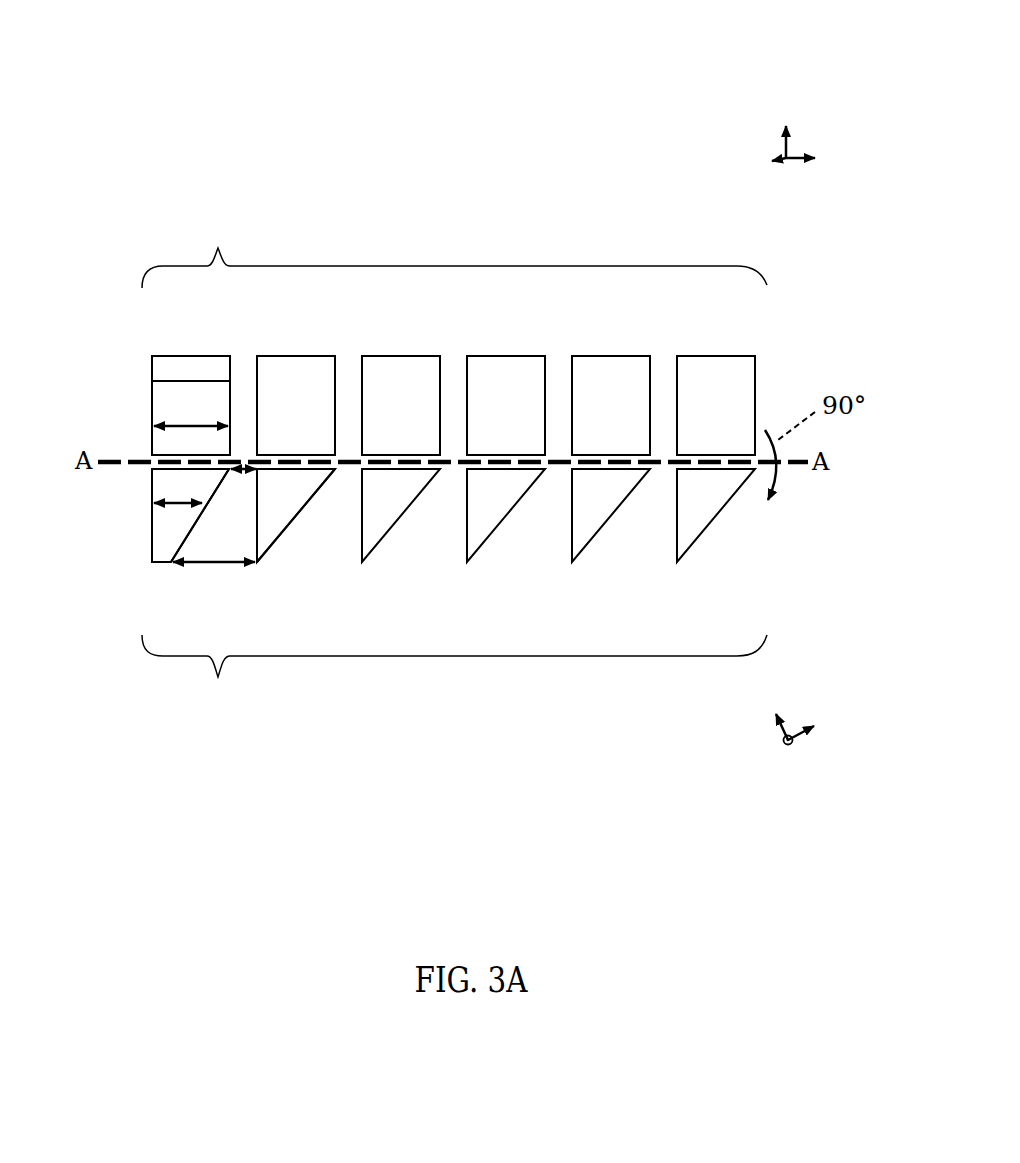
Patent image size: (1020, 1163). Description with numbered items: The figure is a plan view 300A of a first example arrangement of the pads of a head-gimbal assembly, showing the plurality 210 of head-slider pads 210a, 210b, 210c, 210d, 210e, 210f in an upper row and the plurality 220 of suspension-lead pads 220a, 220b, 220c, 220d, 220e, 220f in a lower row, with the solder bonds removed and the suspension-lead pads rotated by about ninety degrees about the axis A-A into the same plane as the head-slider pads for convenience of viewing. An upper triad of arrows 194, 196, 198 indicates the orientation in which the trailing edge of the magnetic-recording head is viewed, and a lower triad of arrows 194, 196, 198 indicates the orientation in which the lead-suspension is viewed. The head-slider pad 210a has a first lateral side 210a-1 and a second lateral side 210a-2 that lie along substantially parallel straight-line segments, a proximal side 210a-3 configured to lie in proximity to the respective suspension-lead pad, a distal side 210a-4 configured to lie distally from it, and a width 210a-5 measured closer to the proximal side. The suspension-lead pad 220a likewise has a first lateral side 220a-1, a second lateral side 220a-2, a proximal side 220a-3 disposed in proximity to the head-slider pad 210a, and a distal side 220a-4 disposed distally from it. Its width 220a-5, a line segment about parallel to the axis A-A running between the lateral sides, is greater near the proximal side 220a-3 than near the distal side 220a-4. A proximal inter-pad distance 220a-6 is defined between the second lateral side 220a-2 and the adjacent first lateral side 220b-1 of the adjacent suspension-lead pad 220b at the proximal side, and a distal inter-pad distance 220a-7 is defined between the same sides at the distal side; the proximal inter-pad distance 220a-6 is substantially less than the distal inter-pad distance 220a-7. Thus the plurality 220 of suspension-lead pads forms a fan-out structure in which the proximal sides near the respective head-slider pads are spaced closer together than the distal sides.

The plan view 300A is at (124, 86).
The plurality of head-slider pads 210 is at (454, 251).
The plurality of suspension-lead pads 220 is at (454, 676).
The head-slider pad 210a is at (181, 372).
The head-slider pad 210b is at (286, 372).
The head-slider pad 210c is at (391, 372).
The head-slider pad 210d is at (496, 372).
The head-slider pad 210e is at (601, 372).
The head-slider pad 210f is at (703, 372).
The first lateral side 210a-1 is at (152, 362).
The second lateral side 210a-2 is at (152, 381).
The proximal side 210a-3 is at (175, 454).
The distal side 210a-4 is at (172, 357).
The width of head-slider pad 210a-5 is at (181, 426).
The suspension-lead pad 220a is at (163, 546).
The suspension-lead pad 220b is at (270, 547).
The suspension-lead pad 220c is at (375, 547).
The suspension-lead pad 220d is at (480, 547).
The suspension-lead pad 220e is at (585, 547).
The suspension-lead pad 220f is at (688, 547).
The first lateral side 220a-1 is at (152, 555).
The second lateral side 220a-2 is at (197, 523).
The proximal side 220a-3 is at (173, 470).
The distal side 220a-4 is at (159, 562).
The width of suspension-lead pad 220a-5 is at (183, 505).
The proximal inter-pad distance 220a-6 is at (243, 472).
The distal inter-pad distance 220a-7 is at (206, 563).
The first lateral side 220b-1 is at (258, 507).
The arrow 194 is at (797, 162).
The arrow 196 is at (777, 164).
The arrow 198 is at (783, 147).